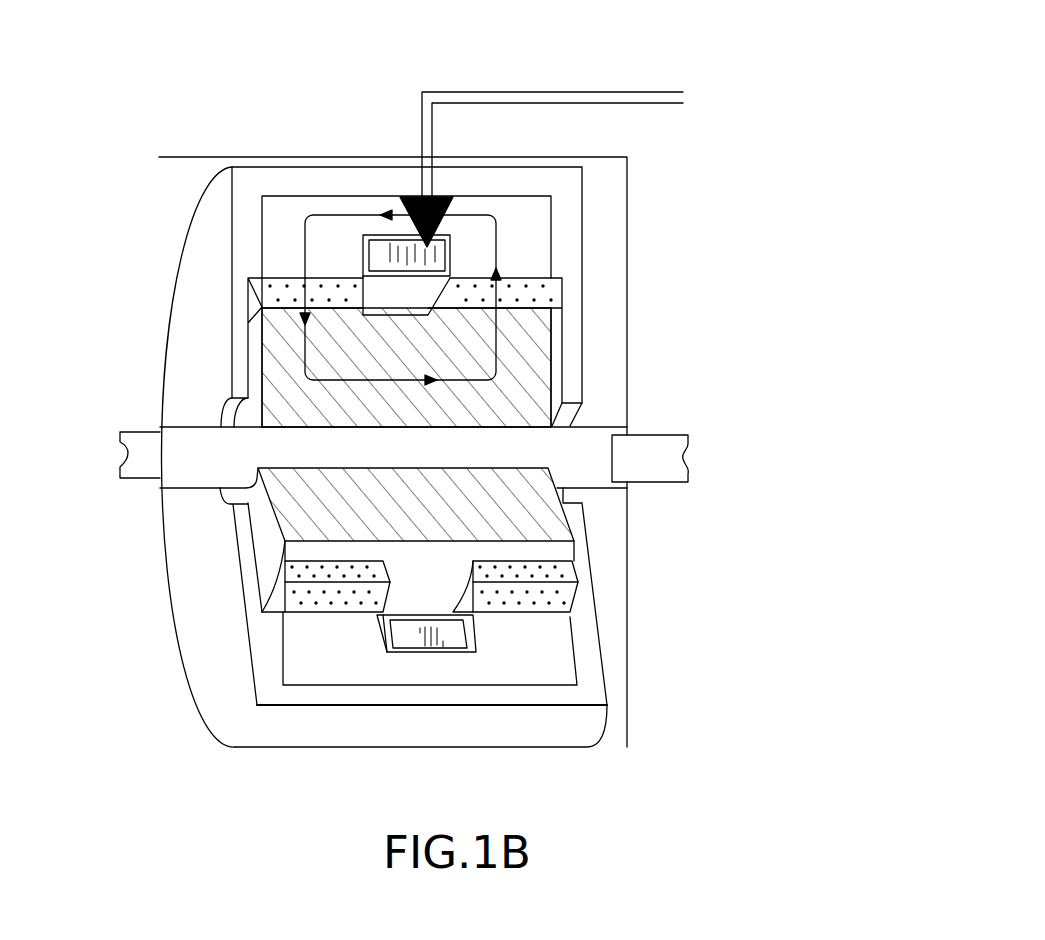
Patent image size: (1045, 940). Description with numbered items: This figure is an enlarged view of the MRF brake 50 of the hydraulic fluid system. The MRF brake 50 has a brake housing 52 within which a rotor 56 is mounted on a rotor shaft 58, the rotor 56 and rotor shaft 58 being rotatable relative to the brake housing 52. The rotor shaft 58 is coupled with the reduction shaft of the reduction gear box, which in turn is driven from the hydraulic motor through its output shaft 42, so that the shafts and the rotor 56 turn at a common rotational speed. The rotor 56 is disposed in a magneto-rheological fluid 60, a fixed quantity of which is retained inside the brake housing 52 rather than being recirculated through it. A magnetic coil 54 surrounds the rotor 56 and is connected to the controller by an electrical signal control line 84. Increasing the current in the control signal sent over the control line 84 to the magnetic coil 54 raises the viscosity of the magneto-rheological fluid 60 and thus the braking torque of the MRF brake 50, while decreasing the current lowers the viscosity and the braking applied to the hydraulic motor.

The output shaft 42 is at (132, 433).
The MRF brake 50 is at (437, 398).
The brake housing 52 is at (160, 549).
The magnetic coil 54 is at (380, 257).
The rotor 56 is at (545, 380).
The rotor shaft 58 is at (413, 457).
The magneto-rheological fluid 60 is at (540, 293).
The electrical signal control line 84 is at (596, 92).